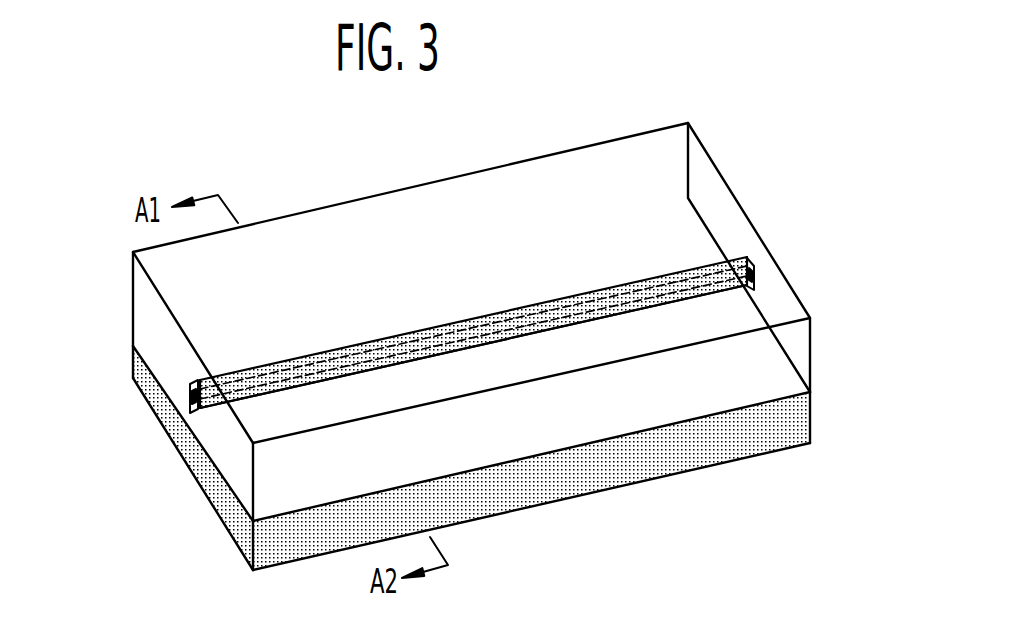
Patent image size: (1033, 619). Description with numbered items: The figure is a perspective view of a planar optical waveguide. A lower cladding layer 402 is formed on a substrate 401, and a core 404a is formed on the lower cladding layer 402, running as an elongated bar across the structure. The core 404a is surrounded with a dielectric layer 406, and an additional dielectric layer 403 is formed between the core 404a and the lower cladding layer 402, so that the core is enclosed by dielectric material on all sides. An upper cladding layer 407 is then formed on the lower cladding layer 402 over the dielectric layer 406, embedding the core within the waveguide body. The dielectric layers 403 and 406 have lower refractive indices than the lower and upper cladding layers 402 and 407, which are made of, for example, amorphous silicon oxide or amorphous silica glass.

The substrate 401 is at (497, 498).
The lower cladding layer 402 is at (230, 467).
The dielectric layer 403 is at (199, 413).
The core 404a is at (196, 403).
The dielectric layer 406 is at (203, 381).
The upper cladding layer 407 is at (633, 343).